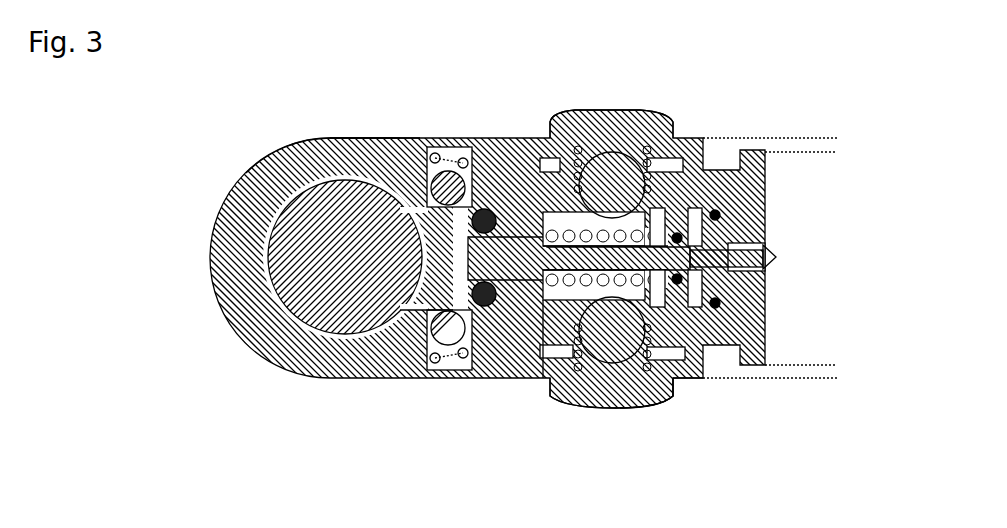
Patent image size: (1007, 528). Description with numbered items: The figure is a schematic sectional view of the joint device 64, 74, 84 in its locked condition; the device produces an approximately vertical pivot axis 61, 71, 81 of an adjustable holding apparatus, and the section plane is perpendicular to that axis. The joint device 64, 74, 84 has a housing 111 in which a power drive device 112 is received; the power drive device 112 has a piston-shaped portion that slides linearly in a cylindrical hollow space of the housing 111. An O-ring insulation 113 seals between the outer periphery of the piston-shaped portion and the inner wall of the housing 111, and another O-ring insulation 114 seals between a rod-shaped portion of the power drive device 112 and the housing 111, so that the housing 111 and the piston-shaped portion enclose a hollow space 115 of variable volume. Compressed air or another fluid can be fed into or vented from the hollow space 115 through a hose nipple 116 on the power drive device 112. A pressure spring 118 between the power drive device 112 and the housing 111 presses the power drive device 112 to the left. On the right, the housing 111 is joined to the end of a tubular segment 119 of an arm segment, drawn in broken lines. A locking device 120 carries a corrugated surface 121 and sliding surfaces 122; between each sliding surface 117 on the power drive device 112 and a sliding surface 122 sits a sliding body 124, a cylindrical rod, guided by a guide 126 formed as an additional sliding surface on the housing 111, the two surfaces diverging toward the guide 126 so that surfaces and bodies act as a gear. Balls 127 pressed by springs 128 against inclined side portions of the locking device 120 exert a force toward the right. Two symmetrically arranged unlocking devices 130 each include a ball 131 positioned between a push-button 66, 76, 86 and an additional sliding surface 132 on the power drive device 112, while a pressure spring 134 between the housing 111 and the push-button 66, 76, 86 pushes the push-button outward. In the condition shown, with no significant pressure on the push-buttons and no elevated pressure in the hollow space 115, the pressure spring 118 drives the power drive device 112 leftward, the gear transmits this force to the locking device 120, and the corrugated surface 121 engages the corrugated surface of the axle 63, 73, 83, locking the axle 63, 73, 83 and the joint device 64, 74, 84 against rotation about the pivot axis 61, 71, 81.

The housing 111 is at (256, 343).
The axle 63 is at (308, 143).
The axle 73 is at (308, 143).
The axle 83 is at (303, 160).
The joint device 64 is at (348, 82).
The joint device 74 is at (348, 82).
The joint device 84 is at (345, 73).
The pivot axis 61 is at (349, 308).
The pivot axis 71 is at (349, 308).
The pivot axis 81 is at (345, 258).
The springs 128 is at (435, 150).
The balls 127 is at (478, 208).
The sliding surfaces 117 is at (556, 232).
The pressure spring 118 is at (590, 217).
The O-ring insulation 114 is at (679, 236).
The tubular segment 119 is at (782, 138).
The O-ring insulation 113 is at (722, 213).
The power drive device 112 is at (731, 237).
The hose nipple 116 is at (778, 257).
The hollow space 115 is at (728, 282).
The corrugated surface 121 is at (403, 310).
The locking device 120 is at (417, 310).
The guide 126 is at (437, 350).
The sliding surfaces 122 is at (485, 307).
The sliding body 124 is at (512, 358).
The additional sliding surface 132 is at (550, 380).
The unlocking devices 130 is at (644, 89).
The ball 131 is at (612, 385).
The push-button 66 is at (688, 413).
The push-button 76 is at (688, 413).
The push-button 86 is at (667, 400).
The pressure spring 134 is at (680, 380).